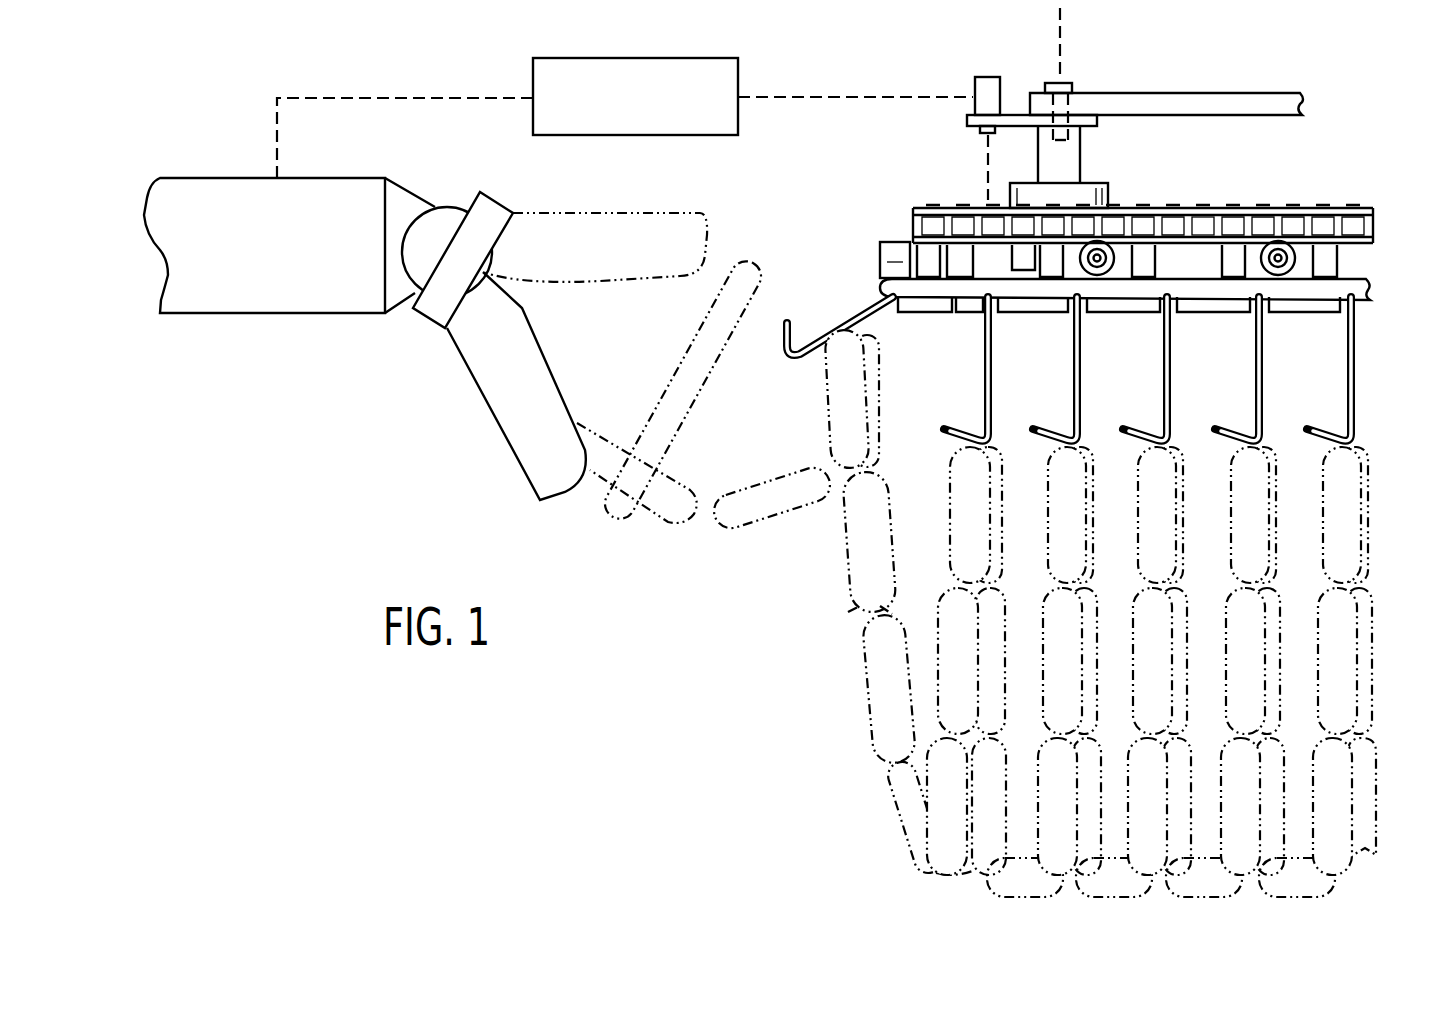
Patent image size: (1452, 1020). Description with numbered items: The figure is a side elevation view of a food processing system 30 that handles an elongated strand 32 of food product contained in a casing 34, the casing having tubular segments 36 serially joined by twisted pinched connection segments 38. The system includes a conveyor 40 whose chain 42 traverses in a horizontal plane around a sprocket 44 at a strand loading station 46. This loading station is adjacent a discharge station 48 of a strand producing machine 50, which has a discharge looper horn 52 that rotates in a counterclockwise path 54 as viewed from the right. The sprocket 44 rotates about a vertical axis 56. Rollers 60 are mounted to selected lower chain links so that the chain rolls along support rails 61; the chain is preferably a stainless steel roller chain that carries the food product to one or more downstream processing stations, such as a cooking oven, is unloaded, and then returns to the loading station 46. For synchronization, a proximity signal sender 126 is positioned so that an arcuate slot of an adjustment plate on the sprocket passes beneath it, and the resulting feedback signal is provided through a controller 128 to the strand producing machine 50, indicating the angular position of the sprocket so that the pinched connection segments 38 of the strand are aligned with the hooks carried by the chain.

The food processing system 30 is at (1019, 613).
The elongated strand 32 is at (858, 540).
The casing 34 is at (856, 594).
The tubular segments 36 is at (870, 692).
The twisted pinched connection segments 38 is at (878, 613).
The conveyor 40 is at (1154, 220).
The chain 42 is at (1143, 202).
The sprocket 44 is at (1205, 225).
The strand loading station 46 is at (799, 260).
The discharge station 48 is at (726, 246).
The strand producing machine 50 is at (281, 317).
The discharge looper horn 52 is at (486, 380).
The counterclockwise path 54 is at (740, 352).
The vertical axis 56 is at (1066, 42).
The rollers 60 is at (1286, 280).
The support rails 61 is at (1341, 291).
The proximity signal sender 126 is at (973, 90).
The controller 128 is at (640, 58).